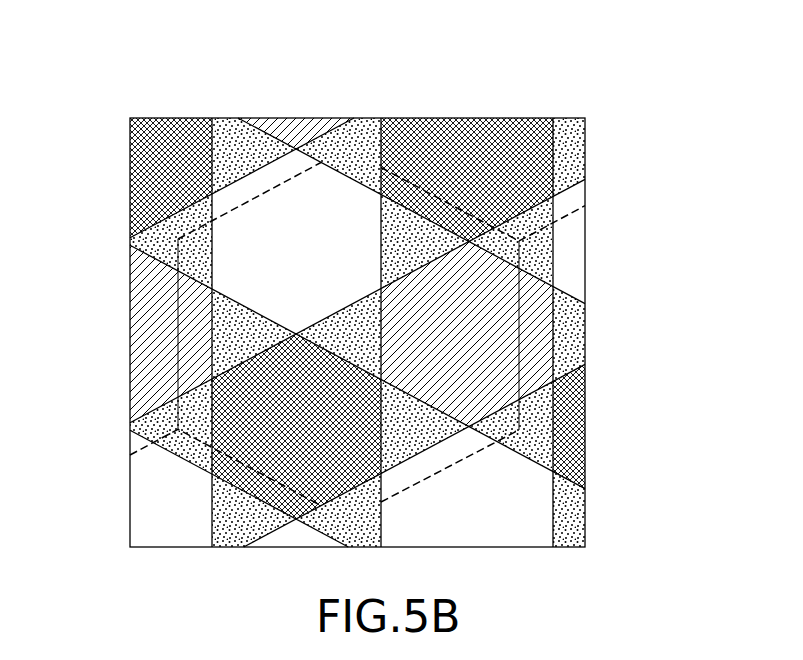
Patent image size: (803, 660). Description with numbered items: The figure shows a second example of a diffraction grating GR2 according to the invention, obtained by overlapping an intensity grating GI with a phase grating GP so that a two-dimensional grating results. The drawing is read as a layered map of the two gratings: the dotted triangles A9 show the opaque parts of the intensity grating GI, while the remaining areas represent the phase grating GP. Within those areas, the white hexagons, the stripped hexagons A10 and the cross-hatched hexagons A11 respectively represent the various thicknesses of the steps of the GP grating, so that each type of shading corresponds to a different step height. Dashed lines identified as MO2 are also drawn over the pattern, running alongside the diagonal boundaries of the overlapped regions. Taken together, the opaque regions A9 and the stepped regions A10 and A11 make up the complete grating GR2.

The cross-hatched hexagons A11 is at (155, 158).
The stripped hexagons A10 is at (162, 337).
The dotted triangles A9 is at (231, 152).
The diffraction grating GR2 is at (416, 152).
The metal/data line MO2 is at (445, 470).